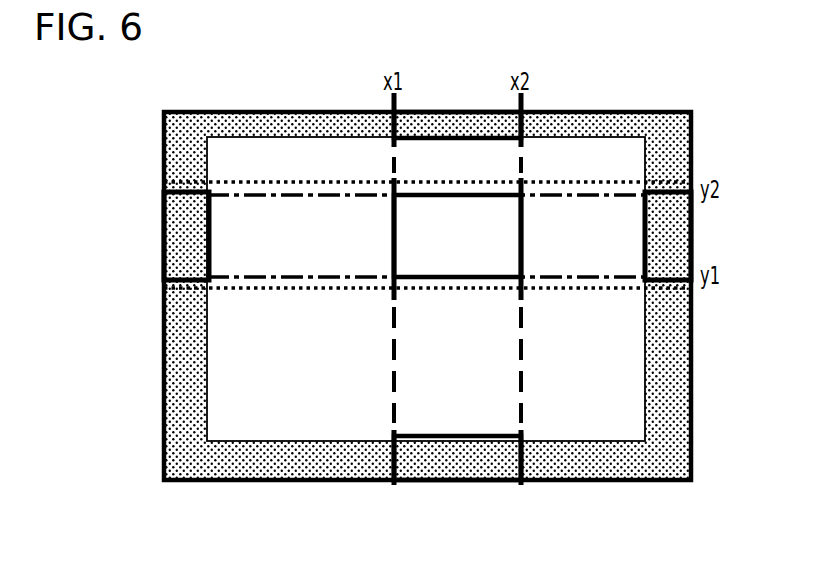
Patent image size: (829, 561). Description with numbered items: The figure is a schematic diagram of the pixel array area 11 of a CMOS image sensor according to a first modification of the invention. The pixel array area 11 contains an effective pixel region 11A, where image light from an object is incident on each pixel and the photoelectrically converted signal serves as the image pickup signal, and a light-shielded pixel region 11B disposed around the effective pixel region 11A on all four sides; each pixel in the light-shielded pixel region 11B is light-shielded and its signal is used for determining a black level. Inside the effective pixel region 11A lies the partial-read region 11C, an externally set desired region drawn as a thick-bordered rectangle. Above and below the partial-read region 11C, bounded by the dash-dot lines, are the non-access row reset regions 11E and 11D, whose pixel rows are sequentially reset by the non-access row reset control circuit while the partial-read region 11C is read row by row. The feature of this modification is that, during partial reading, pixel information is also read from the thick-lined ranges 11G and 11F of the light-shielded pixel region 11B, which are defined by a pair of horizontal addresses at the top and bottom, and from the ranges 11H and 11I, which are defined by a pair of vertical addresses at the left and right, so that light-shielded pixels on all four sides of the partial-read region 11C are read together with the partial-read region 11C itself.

The pixel array area 11 is at (616, 107).
The effective pixel region 11A is at (640, 162).
The light-shielded pixel region 11B is at (675, 386).
The partial-read region 11C is at (513, 220).
The non-access row reset region 11D is at (300, 287).
The non-access row reset region 11E is at (300, 191).
The range of light-shielded pixel region 11F is at (450, 465).
The range of light-shielded pixel region 11G is at (450, 124).
The range of light-shielded pixel region 11H is at (193, 243).
The range of light-shielded pixel region 11I is at (680, 258).